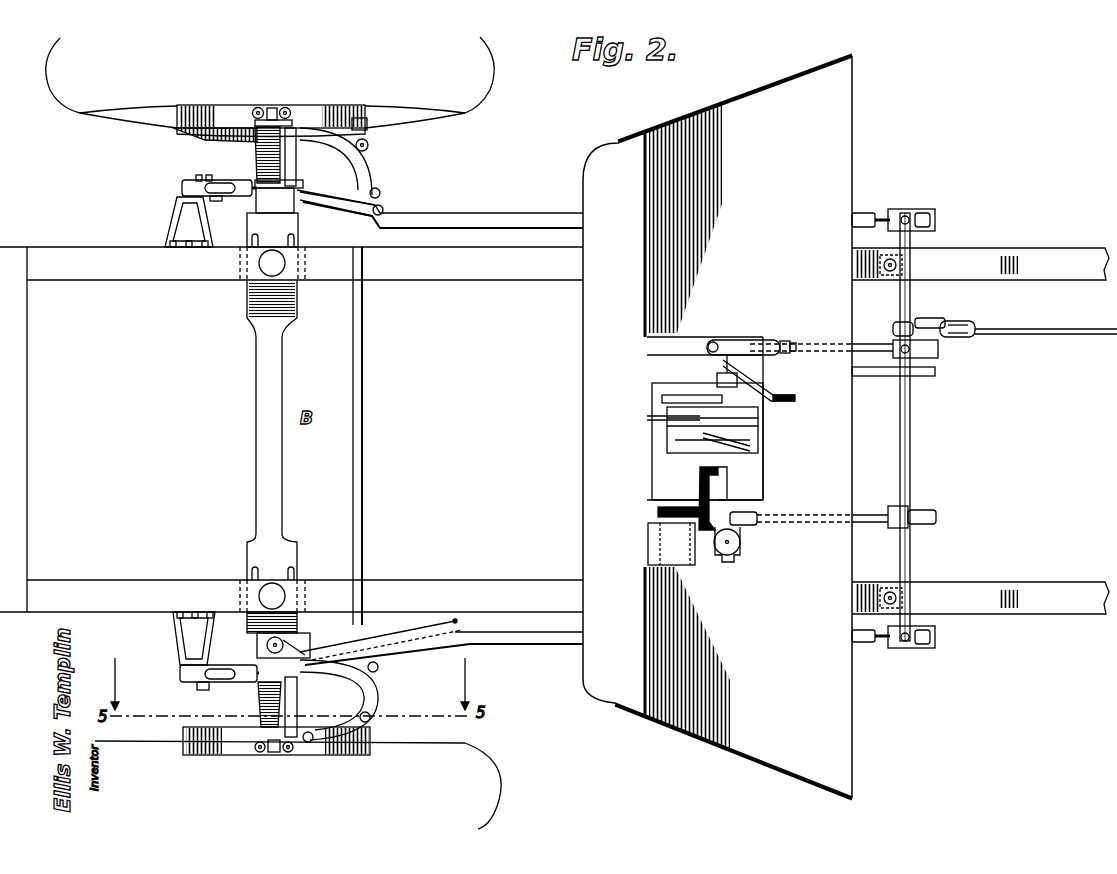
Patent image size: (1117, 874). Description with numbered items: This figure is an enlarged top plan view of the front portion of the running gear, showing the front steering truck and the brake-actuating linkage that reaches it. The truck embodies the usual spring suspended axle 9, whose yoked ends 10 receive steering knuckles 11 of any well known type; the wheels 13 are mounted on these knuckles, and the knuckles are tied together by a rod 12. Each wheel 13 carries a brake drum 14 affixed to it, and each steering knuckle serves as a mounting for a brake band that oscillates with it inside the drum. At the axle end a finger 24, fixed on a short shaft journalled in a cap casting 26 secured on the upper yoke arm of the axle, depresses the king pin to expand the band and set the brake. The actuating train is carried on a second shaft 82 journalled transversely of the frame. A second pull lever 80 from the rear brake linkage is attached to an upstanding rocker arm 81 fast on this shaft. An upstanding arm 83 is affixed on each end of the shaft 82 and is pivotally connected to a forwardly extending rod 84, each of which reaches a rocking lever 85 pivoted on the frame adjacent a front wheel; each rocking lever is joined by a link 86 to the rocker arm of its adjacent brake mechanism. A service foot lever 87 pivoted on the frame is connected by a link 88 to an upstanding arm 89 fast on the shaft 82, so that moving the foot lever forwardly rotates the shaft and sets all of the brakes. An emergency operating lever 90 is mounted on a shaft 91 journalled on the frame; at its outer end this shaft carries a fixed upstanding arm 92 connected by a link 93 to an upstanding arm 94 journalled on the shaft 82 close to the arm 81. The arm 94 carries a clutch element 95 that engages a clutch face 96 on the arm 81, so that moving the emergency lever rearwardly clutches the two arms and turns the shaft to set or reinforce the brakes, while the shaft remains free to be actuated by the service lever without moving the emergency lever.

The spring suspended axle 9 is at (256, 516).
The yoked ends 10 is at (253, 152).
The steering knuckles 11 is at (330, 137).
The rod 12 is at (364, 425).
The wheels 13 is at (273, 433).
The brake drum 14 is at (368, 120).
The finger 24 is at (272, 110).
The cap casting 26 is at (315, 444).
The second pull lever 80 is at (1016, 328).
The upstanding rocker arm 81 is at (955, 323).
The second shaft 82 is at (912, 445).
The upstanding arm 83 is at (917, 209).
The forwardly extending rods 84 is at (512, 222).
The rocking lever 85 is at (180, 189).
The link 86 is at (203, 178).
The service foot lever 87 is at (699, 493).
The link 88 is at (878, 513).
The upstanding arm 89 is at (937, 518).
The emergency operating lever 90 is at (793, 396).
The shaft 91 is at (724, 399).
The fixed upstanding arm 92 is at (737, 340).
The link 93 is at (852, 345).
The upstanding arm 94 is at (940, 349).
The clutch element 95 is at (893, 330).
The clutch face 96 is at (920, 322).